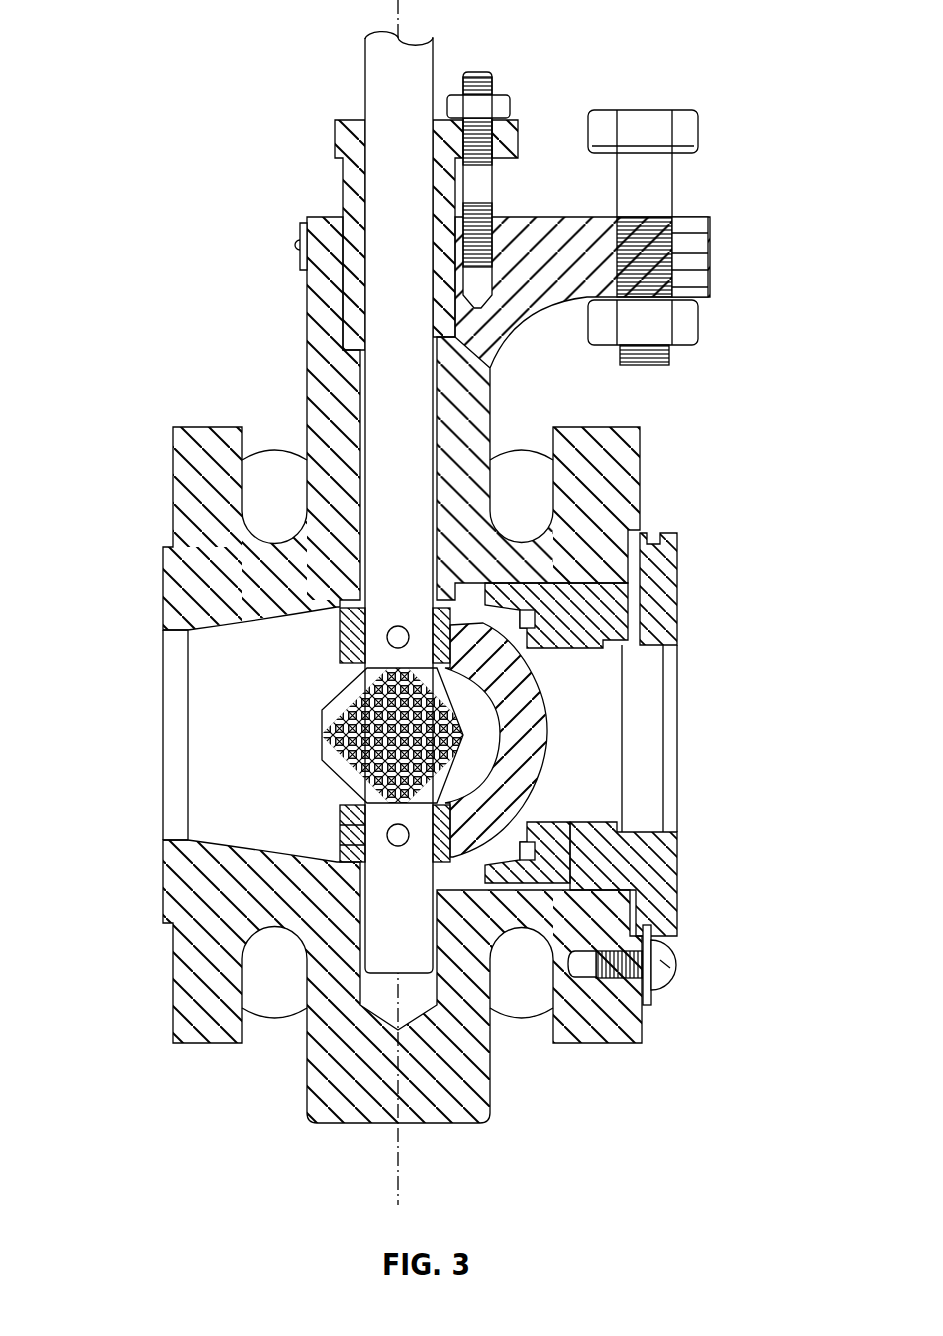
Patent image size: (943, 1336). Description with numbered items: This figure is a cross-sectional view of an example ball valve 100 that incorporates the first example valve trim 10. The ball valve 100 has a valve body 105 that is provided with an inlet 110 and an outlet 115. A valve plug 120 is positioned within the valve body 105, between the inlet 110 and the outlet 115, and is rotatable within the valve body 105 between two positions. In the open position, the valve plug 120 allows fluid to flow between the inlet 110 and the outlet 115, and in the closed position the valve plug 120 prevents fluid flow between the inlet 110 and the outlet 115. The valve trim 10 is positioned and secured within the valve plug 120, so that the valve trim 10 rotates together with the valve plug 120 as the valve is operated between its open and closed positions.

The ball valve 100 is at (423, 602).
The valve body 105 is at (188, 520).
The inlet 110 is at (653, 752).
The outlet 115 is at (212, 734).
The valve plug 120 is at (528, 691).
The valve trim 10 is at (335, 698).